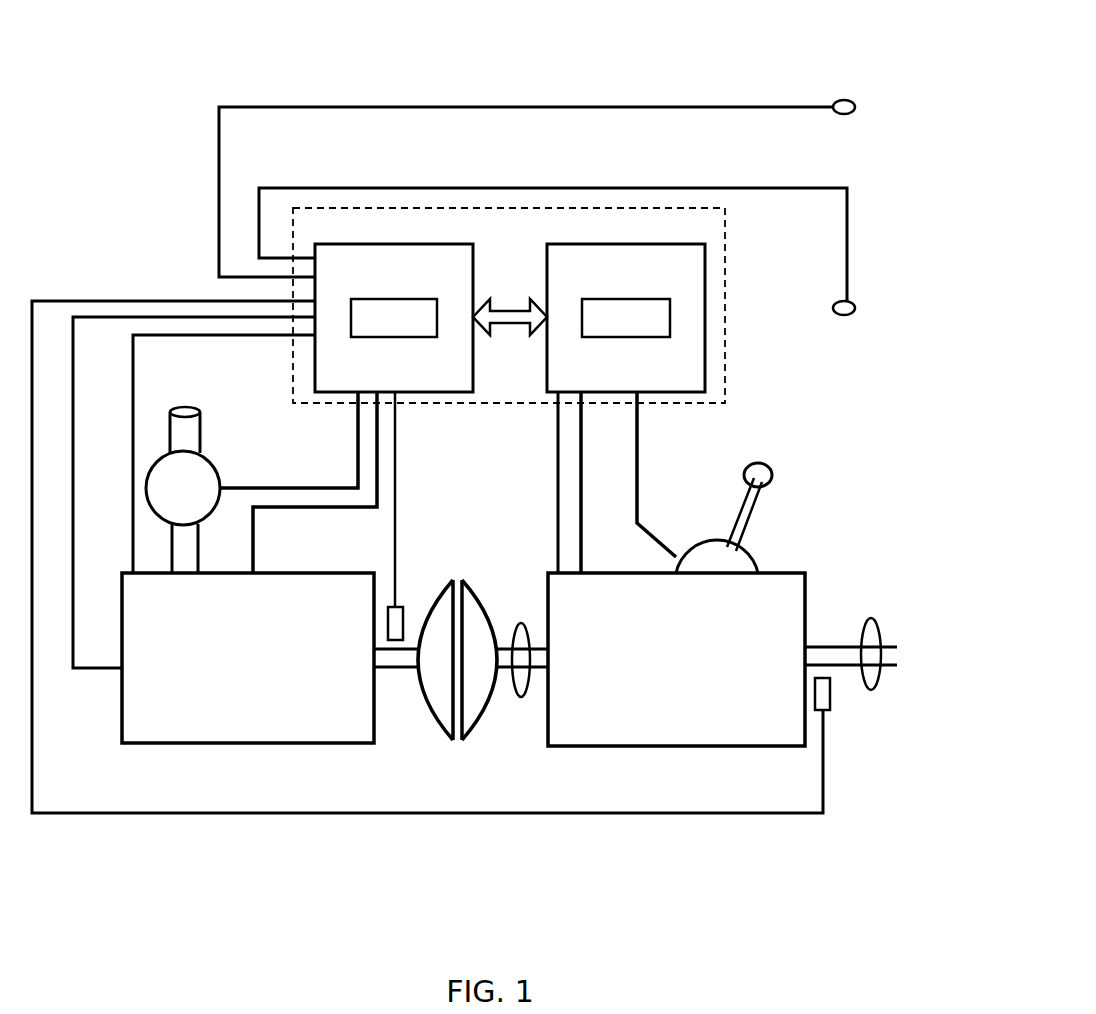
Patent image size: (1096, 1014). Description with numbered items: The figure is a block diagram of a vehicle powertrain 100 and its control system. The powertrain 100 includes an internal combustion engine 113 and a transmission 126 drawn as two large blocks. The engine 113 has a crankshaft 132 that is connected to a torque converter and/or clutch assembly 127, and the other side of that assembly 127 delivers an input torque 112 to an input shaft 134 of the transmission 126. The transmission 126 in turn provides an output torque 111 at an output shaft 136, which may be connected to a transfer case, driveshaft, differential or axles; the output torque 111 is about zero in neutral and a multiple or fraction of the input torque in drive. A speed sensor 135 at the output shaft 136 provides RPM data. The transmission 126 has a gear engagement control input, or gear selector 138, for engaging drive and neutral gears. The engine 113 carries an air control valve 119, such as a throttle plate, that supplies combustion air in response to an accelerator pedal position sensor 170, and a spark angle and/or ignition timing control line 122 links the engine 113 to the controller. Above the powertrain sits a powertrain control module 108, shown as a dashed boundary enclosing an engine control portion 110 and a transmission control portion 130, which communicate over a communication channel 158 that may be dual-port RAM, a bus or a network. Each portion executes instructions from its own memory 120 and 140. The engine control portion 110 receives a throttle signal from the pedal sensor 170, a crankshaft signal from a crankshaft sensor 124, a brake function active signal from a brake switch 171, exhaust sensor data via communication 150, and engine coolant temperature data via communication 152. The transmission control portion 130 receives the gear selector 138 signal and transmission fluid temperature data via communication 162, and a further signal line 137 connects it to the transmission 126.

The powertrain 100 is at (804, 910).
The powertrain control module 108 is at (489, 194).
The engine control portion 110 is at (394, 296).
The output torque 111 is at (873, 620).
The input torque 112 is at (515, 626).
The internal combustion engine 113 is at (233, 673).
The air control valve 119 is at (168, 499).
The memory 120 is at (379, 329).
The spark angle and/or ignition timing control line 122 is at (256, 528).
The crankshaft sensor 124 is at (402, 605).
The transmission 126 is at (668, 673).
The torque converter and/or clutch assembly 127 is at (453, 580).
The transmission control portion 130 is at (664, 302).
The crankshaft 132 is at (398, 672).
The input shaft 134 is at (532, 672).
The speed sensor 135 is at (826, 712).
The output shaft 136 is at (887, 668).
The signal line 137 is at (558, 470).
The gear selector 138 is at (764, 470).
The memory 140 is at (611, 329).
The communication 150 is at (102, 672).
The communication 152 is at (136, 400).
The communication channel 158 is at (515, 300).
The communication 162 is at (581, 573).
The accelerator pedal position sensor 170 is at (838, 314).
The brake switch 171 is at (838, 113).